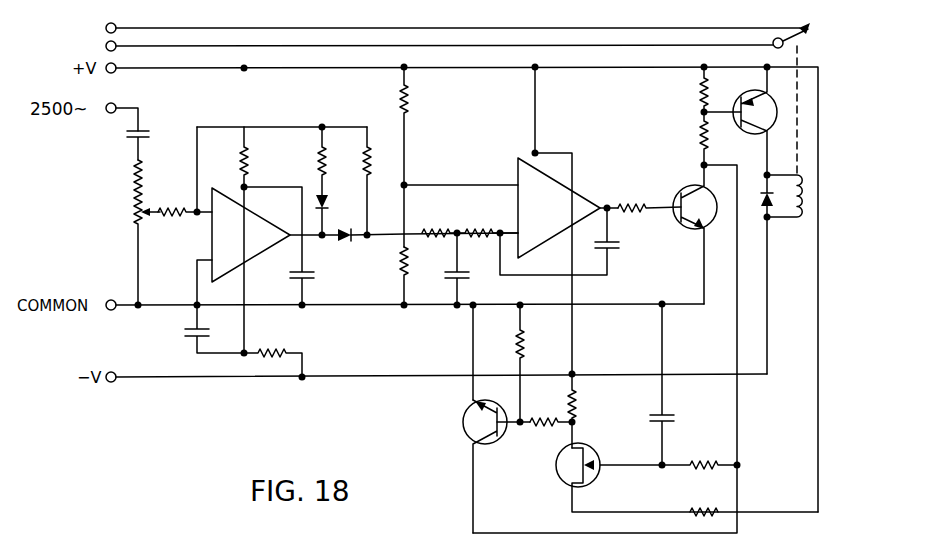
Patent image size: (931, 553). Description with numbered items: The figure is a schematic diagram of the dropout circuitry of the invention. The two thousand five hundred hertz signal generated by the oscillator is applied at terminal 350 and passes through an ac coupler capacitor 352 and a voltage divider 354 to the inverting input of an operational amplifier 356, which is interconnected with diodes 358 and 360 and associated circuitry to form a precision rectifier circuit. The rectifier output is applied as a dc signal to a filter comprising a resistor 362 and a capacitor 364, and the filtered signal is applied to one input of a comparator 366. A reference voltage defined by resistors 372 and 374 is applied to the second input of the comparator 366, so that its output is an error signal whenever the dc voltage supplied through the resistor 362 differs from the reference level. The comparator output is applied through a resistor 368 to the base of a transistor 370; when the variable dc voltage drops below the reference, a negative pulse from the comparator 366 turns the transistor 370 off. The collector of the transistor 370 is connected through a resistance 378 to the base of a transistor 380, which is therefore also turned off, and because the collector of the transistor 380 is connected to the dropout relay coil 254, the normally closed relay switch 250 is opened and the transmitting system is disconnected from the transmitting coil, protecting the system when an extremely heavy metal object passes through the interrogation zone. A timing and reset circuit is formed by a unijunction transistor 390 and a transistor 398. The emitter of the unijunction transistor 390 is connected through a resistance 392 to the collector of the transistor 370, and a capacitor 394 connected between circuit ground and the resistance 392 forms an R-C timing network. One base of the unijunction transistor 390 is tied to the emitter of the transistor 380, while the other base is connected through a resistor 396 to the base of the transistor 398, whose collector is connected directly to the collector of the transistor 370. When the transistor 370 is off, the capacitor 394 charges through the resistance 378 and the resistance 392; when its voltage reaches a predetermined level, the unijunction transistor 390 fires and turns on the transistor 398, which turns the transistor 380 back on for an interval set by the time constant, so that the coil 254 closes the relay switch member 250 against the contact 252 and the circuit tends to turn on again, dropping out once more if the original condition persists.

The relay switch 250 is at (800, 42).
The contact 252 is at (803, 27).
The coil 254 is at (797, 221).
The terminal 350 is at (108, 114).
The ac coupler capacitor 352 is at (146, 130).
The voltage divider 354 is at (134, 213).
The operational amplifier 356 is at (257, 246).
The diode 358 is at (328, 203).
The diode 360 is at (344, 242).
The resistor 362 is at (430, 230).
The capacitor 364 is at (462, 280).
The comparator 366 is at (571, 219).
The resistor 368 is at (618, 203).
The transistor 370 is at (679, 216).
The resistor 372 is at (410, 104).
The resistor 374 is at (411, 254).
The resistance 378 is at (700, 140).
The transistor 380 is at (742, 99).
The unijunction transistor 390 is at (594, 452).
The resistance 392 is at (700, 460).
The capacitor 394 is at (668, 413).
The resistor 396 is at (545, 428).
The transistor 398 is at (462, 420).